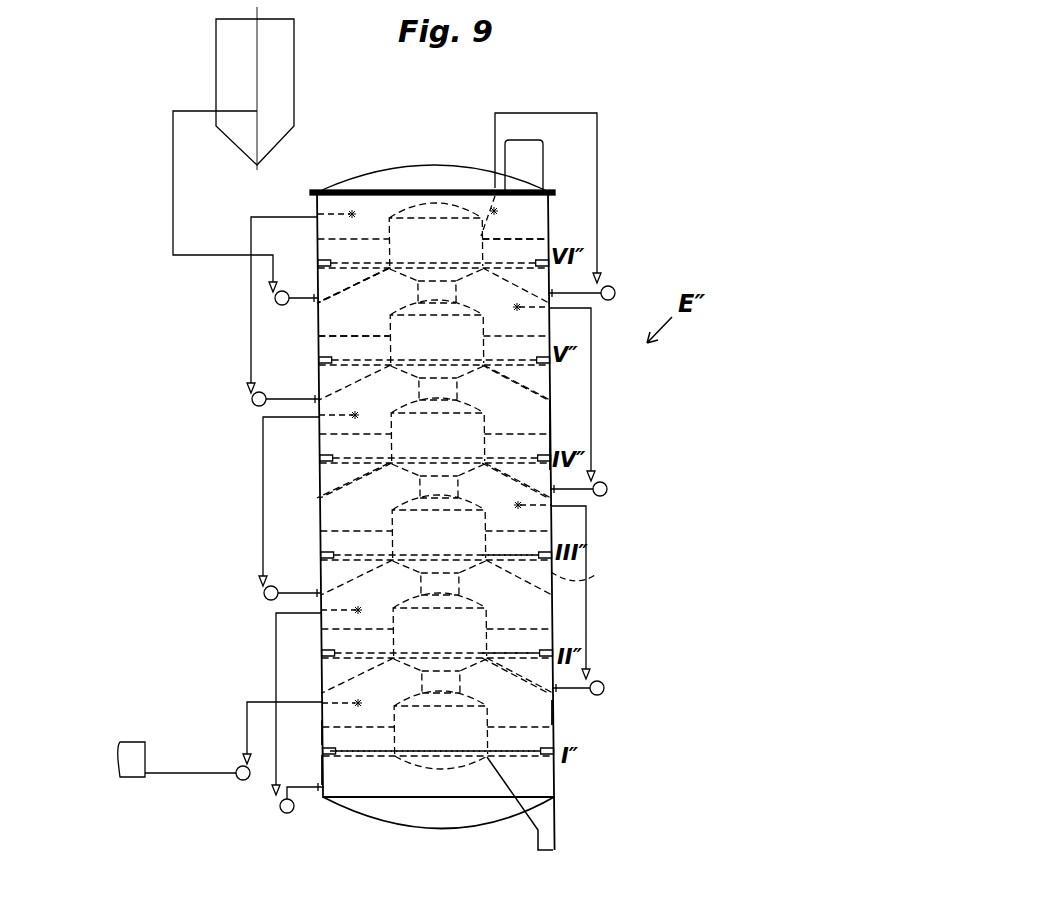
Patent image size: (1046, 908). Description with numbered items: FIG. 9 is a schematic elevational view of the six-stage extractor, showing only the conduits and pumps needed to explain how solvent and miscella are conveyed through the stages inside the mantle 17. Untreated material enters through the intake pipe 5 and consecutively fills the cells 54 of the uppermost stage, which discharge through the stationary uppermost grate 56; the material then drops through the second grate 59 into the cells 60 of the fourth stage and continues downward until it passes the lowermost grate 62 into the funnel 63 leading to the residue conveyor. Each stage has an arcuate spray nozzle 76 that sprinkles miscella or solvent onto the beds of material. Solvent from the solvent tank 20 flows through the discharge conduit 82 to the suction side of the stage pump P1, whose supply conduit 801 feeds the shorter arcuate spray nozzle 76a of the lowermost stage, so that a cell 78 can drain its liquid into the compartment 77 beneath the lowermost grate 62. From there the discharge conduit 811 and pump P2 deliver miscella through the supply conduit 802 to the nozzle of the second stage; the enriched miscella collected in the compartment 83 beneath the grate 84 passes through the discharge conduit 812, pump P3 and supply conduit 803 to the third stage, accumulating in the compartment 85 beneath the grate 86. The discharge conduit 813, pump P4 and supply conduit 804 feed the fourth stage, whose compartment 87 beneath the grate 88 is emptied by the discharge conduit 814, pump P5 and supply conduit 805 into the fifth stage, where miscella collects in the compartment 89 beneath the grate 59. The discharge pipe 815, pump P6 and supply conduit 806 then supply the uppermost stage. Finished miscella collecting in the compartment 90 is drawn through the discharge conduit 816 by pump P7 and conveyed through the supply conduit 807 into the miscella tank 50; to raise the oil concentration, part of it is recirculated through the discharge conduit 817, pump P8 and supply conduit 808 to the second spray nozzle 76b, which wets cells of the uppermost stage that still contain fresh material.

The miscella tank 50 is at (227, 53).
The supply conduit 807 is at (174, 220).
The supply conduit 806 is at (284, 218).
The supply conduit 805 is at (592, 413).
The supply conduit 804 is at (265, 459).
The supply conduit 803 is at (588, 624).
The supply conduit 802 is at (278, 652).
The supply conduit 801 is at (297, 701).
The supply conduit 808 is at (598, 210).
The discharge conduit 817 is at (590, 300).
The discharge conduit 816 is at (297, 292).
The discharge pipe 815 is at (297, 397).
The discharge conduit 814 is at (583, 492).
The discharge conduit 813 is at (298, 592).
The discharge conduit 812 is at (586, 692).
The discharge conduit 811 is at (309, 790).
The stage pump P1 is at (237, 766).
The pump P2 is at (281, 814).
The pump P3 is at (604, 688).
The pump P4 is at (264, 598).
The pump P5 is at (610, 491).
The pump P6 is at (252, 403).
The pump P7 is at (289, 304).
The pump P8 is at (614, 290).
The intake pipe 5 is at (545, 168).
The solvent tank 20 is at (142, 752).
The discharge conduit 82 is at (188, 772).
The cells 54 is at (532, 245).
The uppermost grate 56 is at (364, 284).
The compartment 90 is at (343, 296).
The second grate 59 is at (382, 363).
The cells 60 is at (551, 433).
The compartment 89 is at (518, 387).
The compartment 87 is at (349, 488).
The grate 88 is at (516, 490).
The grate 86 is at (505, 557).
The compartment 85 is at (588, 576).
The grate 84 is at (515, 656).
The compartment 83 is at (515, 689).
The lowermost grate 62 is at (372, 764).
The cell 78 is at (323, 735).
The compartment 77 is at (323, 772).
The mantle 17 is at (553, 710).
The funnel 63 is at (545, 824).
The spray nozzle 76 is at (356, 214).
The arcuate spray nozzle 76a is at (361, 702).
The second spray nozzle 76b is at (498, 211).